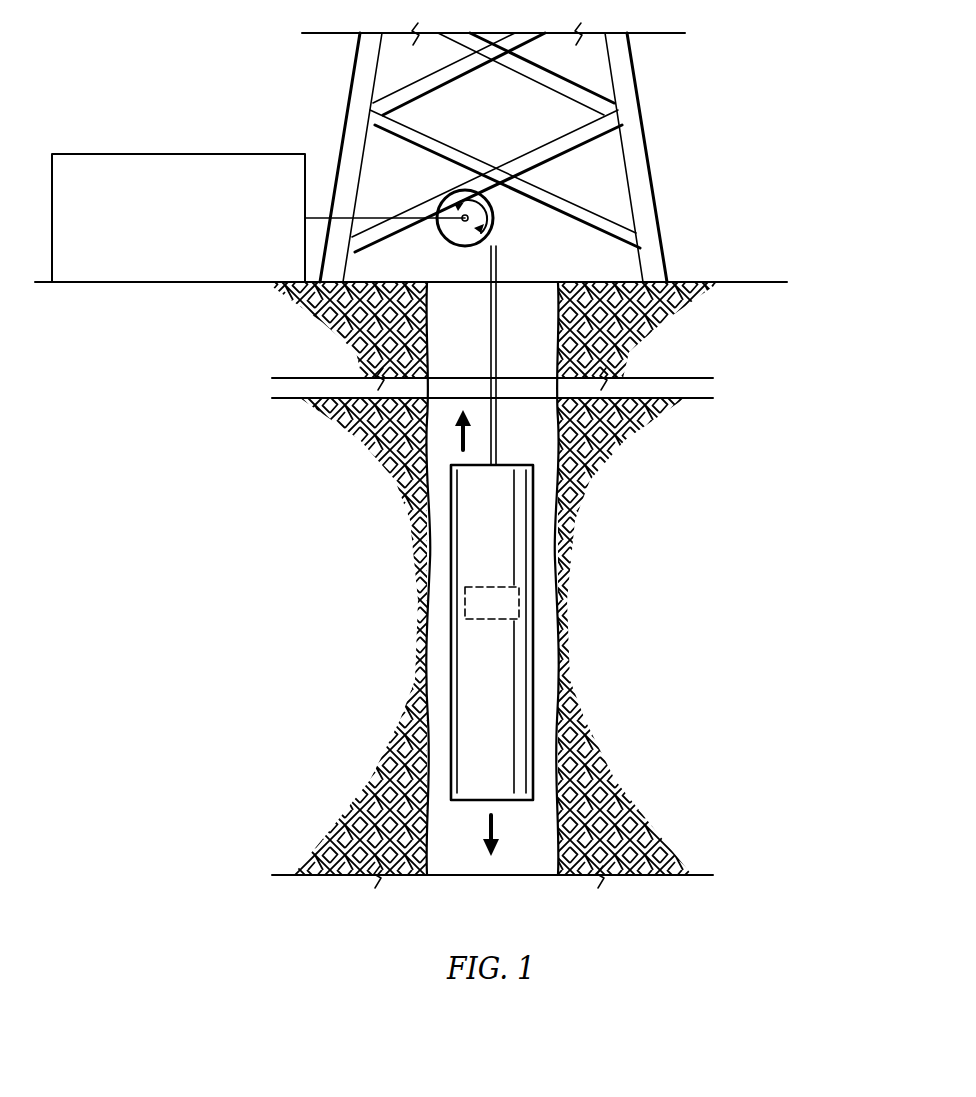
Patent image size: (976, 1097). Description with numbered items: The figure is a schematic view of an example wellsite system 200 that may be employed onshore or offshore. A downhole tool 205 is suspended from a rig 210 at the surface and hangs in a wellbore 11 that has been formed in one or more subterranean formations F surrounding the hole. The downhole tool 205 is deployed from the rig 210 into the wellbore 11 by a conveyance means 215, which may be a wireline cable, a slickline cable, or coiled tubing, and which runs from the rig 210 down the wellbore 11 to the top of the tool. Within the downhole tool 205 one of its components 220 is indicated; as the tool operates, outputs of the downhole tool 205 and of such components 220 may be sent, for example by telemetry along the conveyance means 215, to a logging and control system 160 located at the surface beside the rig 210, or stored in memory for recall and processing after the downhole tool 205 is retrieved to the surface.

The wellsite system 200 is at (427, 474).
The rig 210 is at (648, 166).
The conveyance means 215 is at (497, 249).
The downhole tool 205 is at (498, 604).
The component of the downhole tool 220 is at (498, 621).
The logging and control system 160 is at (177, 154).
The wellbore 11 is at (529, 856).
The subterranean formation F is at (492, 585).